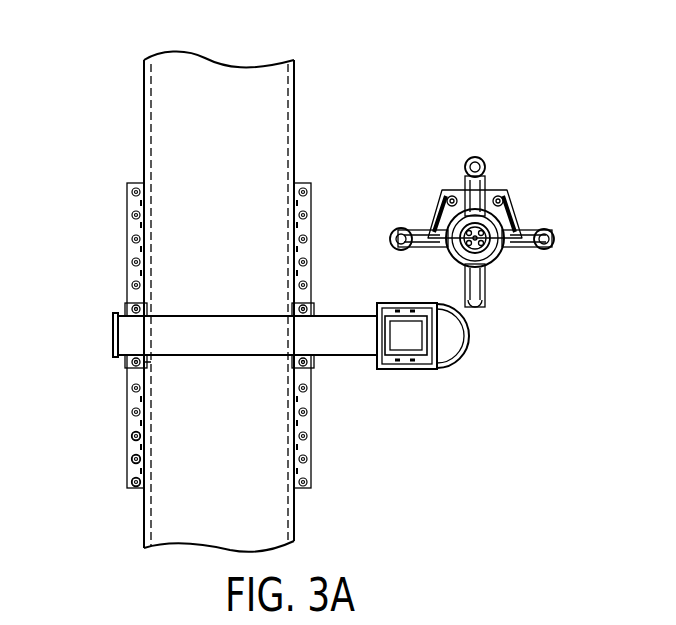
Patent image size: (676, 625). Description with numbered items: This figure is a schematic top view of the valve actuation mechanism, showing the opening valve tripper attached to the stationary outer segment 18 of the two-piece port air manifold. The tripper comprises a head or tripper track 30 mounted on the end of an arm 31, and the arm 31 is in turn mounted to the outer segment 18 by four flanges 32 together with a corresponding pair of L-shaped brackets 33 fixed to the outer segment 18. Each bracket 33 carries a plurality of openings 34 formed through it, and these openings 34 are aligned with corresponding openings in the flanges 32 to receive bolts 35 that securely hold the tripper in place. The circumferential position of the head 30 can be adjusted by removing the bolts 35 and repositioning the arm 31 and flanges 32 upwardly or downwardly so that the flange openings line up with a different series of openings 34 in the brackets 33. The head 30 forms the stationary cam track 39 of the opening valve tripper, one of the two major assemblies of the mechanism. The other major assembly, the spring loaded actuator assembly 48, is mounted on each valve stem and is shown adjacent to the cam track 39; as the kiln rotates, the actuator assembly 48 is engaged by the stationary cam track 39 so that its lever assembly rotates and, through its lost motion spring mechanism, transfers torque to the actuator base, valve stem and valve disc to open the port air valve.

The outer segment 18 is at (195, 70).
The head or tripper track 30 is at (406, 370).
The arm 31 is at (220, 323).
The flanges 32 is at (126, 362).
The L-shaped brackets 33 is at (127, 225).
The openings 34 is at (131, 480).
The bolts 35 is at (150, 365).
The cam track 39 is at (459, 355).
The spring loaded actuator assembly 48 is at (498, 258).